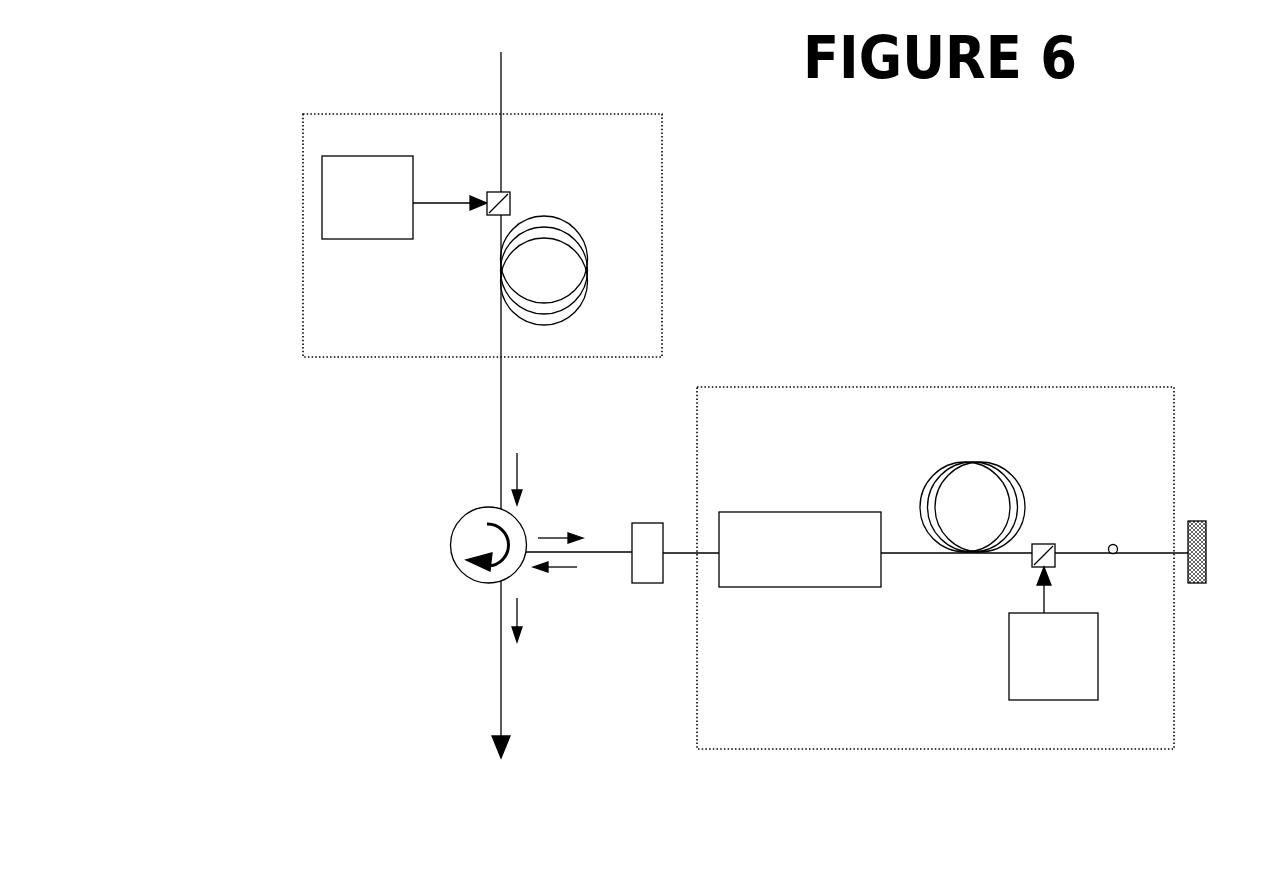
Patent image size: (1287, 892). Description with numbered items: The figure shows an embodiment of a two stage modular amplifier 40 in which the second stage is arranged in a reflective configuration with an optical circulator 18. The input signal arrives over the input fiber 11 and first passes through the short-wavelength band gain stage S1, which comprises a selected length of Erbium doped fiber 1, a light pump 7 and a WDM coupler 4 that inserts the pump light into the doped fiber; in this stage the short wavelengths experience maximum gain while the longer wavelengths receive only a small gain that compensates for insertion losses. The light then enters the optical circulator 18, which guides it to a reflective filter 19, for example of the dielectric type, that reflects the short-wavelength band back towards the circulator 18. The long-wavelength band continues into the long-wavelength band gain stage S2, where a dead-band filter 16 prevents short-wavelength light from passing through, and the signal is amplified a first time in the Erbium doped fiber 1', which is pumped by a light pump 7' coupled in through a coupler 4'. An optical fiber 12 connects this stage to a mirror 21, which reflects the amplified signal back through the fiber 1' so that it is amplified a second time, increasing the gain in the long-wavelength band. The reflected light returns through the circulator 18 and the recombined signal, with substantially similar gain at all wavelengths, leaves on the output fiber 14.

The input fiber 11 is at (495, 99).
The short-wavelength band gain stage S1 is at (300, 237).
The light pump 7 is at (404, 235).
The WDM coupler 4 is at (526, 166).
The Erbium doped fiber 1 is at (570, 280).
The modular amplifier 40 is at (757, 317).
The optical circulator 18 is at (443, 552).
The output fiber 14 is at (503, 675).
The reflective filter 19 is at (632, 583).
The long-wavelength band gain stage S2 is at (1082, 387).
The dead-band filter 16 is at (772, 512).
The second gain stage EDFA 1' is at (956, 479).
The coupler 4' is at (1076, 492).
The light pump 7' is at (1023, 645).
The optical fiber 12 is at (1098, 555).
The mirror 21 is at (1206, 535).